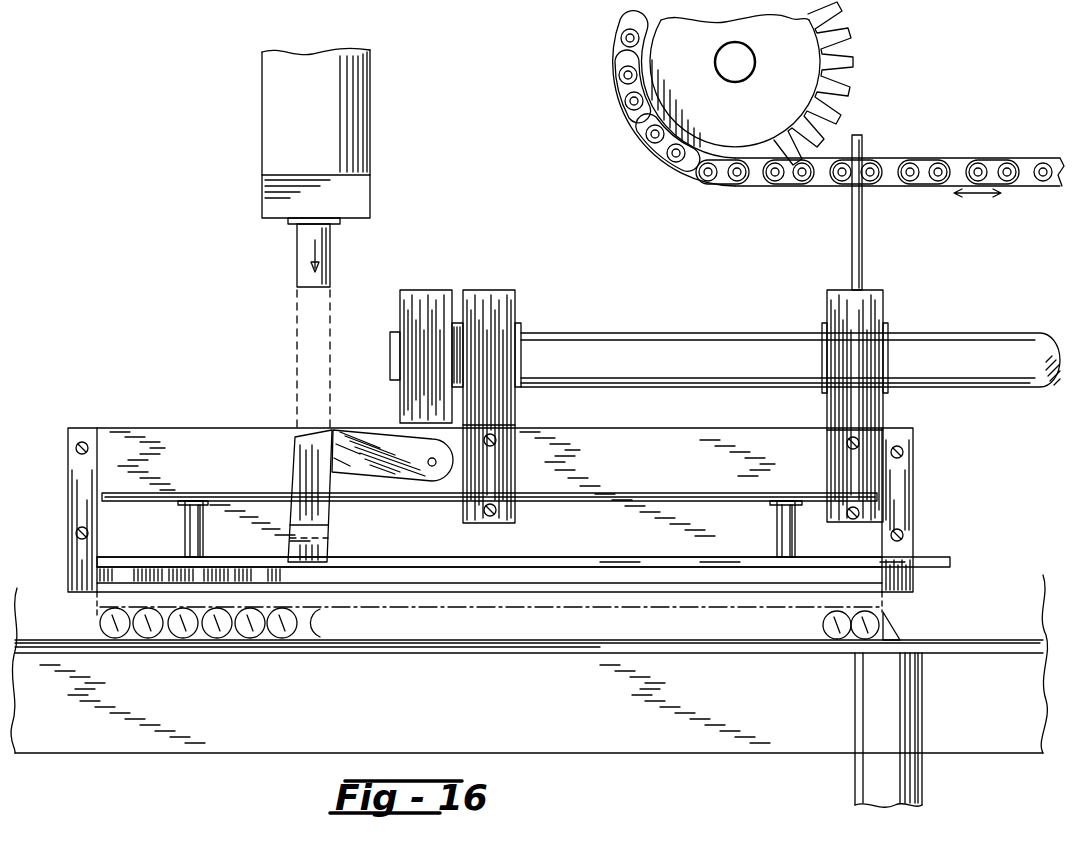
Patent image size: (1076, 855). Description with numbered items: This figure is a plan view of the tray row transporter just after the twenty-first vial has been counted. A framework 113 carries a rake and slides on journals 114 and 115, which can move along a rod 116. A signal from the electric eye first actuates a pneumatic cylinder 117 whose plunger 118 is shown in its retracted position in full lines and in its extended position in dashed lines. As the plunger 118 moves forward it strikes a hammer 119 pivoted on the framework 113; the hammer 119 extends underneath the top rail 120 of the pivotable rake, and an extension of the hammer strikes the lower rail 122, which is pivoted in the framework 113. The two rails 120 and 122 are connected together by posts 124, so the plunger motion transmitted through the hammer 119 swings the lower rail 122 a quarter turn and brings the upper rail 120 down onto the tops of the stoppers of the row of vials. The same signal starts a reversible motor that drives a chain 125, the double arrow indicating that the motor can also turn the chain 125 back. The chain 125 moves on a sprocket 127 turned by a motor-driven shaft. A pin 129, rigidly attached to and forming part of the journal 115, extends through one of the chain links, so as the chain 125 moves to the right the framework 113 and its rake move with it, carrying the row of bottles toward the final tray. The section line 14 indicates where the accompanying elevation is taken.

The section line 14— 14 is at (232, 17).
The framework 113 is at (690, 460).
The journal 114 is at (474, 289).
The journal 115 is at (882, 290).
The rod 116 is at (970, 333).
The pneumatic cylinder 117 is at (316, 148).
The plunger 118 is at (331, 256).
The hammer 119 is at (293, 448).
The top rail 120 is at (418, 501).
The lower rail 122 is at (447, 566).
The posts 124 is at (184, 521).
The chain 125 is at (657, 156).
The sprocket 127 is at (856, 62).
The pin 129 is at (850, 216).